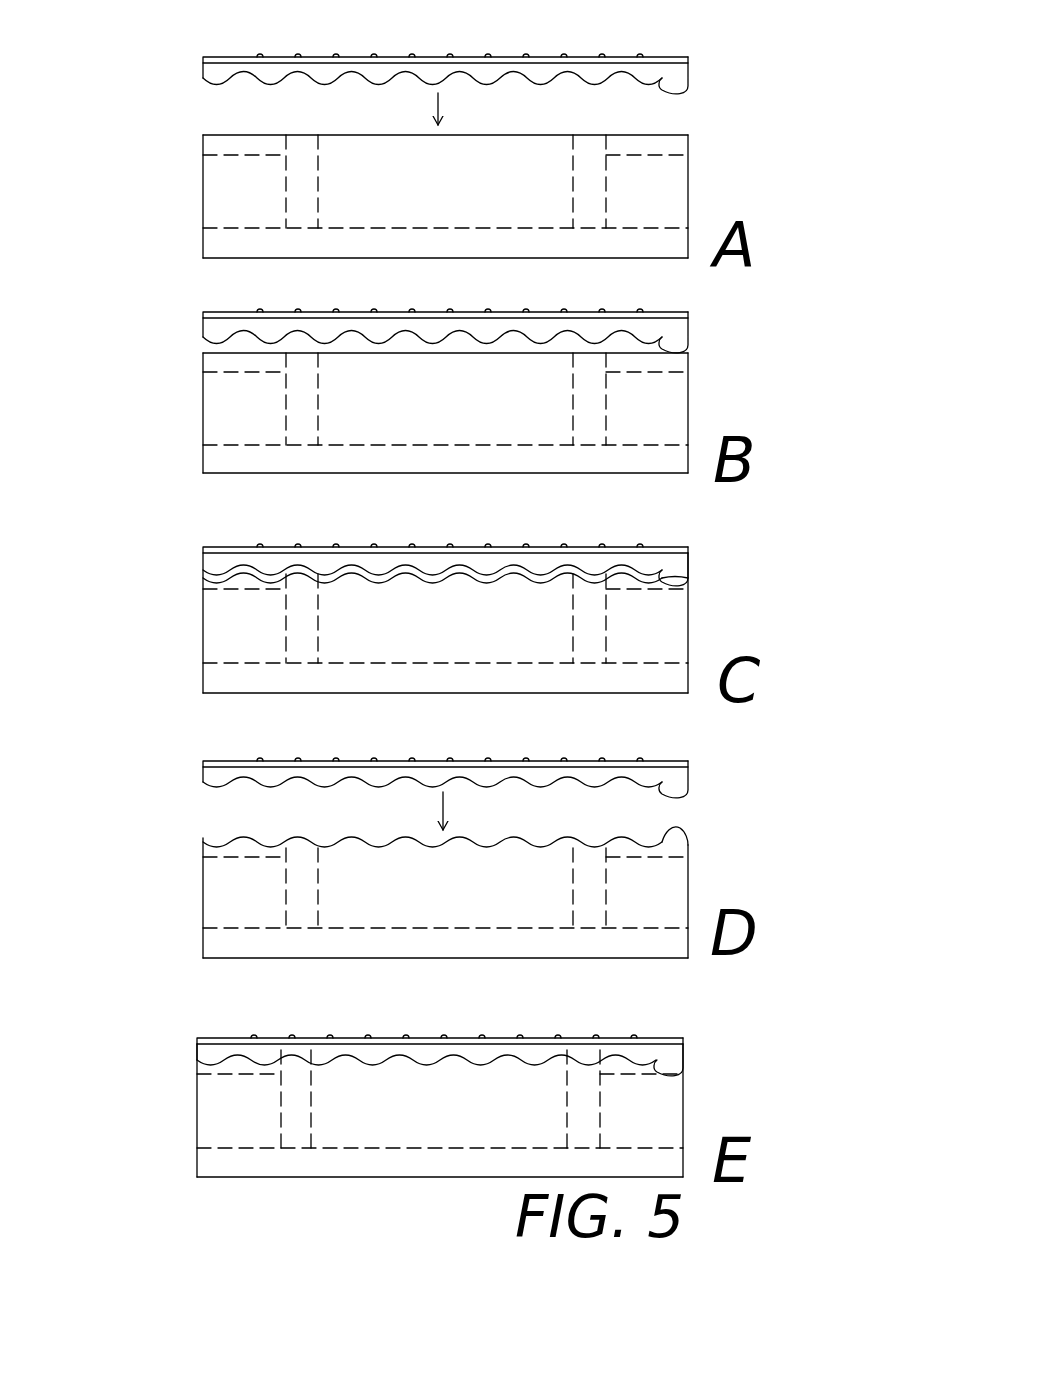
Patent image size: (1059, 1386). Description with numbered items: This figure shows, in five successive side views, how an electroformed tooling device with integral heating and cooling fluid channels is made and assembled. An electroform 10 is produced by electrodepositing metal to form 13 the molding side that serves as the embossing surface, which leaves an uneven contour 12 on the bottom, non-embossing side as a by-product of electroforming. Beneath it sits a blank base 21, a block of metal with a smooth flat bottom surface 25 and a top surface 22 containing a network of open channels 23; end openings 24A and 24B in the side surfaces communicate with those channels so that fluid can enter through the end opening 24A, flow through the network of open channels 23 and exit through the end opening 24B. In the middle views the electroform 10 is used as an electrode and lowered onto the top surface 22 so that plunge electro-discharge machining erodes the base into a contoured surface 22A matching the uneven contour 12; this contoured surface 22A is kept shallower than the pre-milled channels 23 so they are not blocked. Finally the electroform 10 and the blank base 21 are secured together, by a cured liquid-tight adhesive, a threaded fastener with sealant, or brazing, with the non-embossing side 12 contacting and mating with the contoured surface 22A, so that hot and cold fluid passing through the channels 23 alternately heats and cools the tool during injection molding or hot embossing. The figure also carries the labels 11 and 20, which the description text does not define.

The electroform 10 is at (200, 50).
The carrier plate 11 is at (203, 58).
The uneven contour 12 is at (623, 85).
The molding side 13 is at (602, 55).
The mold block assembly 20 is at (60, 110).
The blank base 21 is at (193, 133).
The top surface 22 is at (658, 137).
The contoured surface 22A is at (548, 585).
The network of open channels 23 is at (305, 147).
The end opening 24A is at (223, 193).
The end opening 24B is at (660, 190).
The smooth flat bottom surface 25 is at (228, 258).